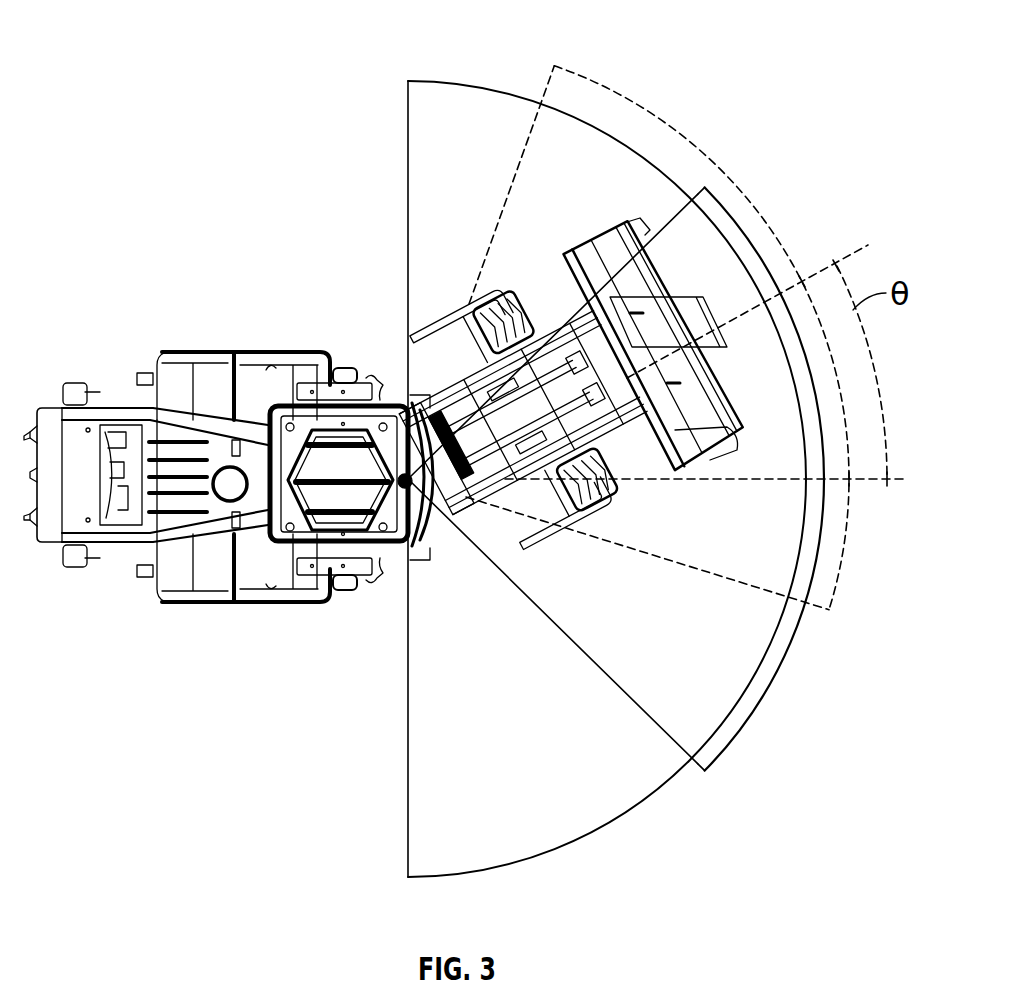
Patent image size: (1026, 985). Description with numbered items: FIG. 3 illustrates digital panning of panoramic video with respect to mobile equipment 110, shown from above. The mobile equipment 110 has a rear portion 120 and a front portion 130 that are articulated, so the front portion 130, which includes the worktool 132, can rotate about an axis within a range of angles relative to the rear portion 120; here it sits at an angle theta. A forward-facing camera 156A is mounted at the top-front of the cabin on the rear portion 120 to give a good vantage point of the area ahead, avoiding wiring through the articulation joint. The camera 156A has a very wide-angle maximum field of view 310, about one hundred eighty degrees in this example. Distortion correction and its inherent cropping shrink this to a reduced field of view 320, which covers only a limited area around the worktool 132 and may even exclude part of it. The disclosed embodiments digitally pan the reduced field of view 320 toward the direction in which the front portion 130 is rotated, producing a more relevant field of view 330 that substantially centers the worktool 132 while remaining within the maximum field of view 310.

The mobile equipment 110 is at (114, 288).
The rear portion 120 is at (292, 553).
The front portion 130 is at (625, 410).
The worktool 132 is at (700, 453).
The forward-facing camera 156A is at (433, 520).
The maximum field of view 310 is at (577, 840).
The reduced field of view 320 is at (768, 690).
The more relevant field of view 330 is at (657, 122).